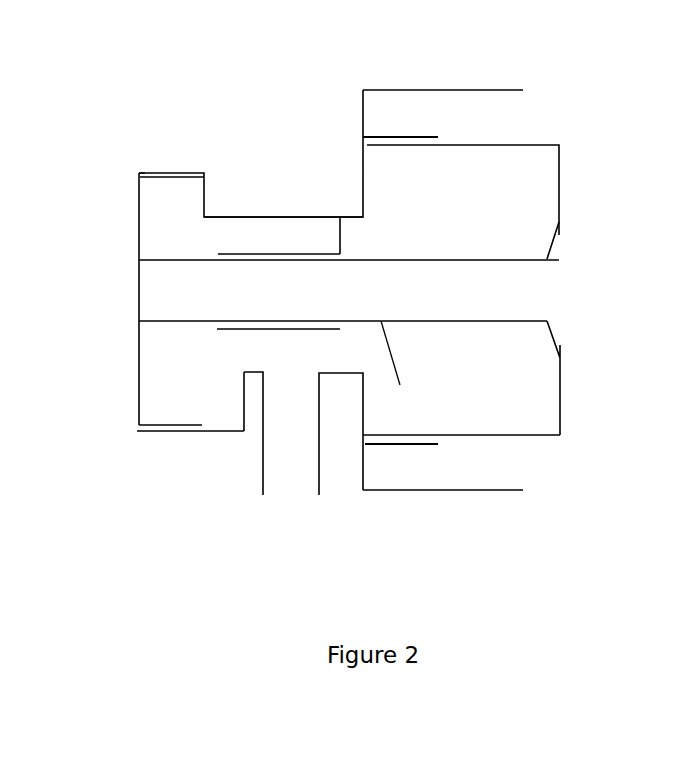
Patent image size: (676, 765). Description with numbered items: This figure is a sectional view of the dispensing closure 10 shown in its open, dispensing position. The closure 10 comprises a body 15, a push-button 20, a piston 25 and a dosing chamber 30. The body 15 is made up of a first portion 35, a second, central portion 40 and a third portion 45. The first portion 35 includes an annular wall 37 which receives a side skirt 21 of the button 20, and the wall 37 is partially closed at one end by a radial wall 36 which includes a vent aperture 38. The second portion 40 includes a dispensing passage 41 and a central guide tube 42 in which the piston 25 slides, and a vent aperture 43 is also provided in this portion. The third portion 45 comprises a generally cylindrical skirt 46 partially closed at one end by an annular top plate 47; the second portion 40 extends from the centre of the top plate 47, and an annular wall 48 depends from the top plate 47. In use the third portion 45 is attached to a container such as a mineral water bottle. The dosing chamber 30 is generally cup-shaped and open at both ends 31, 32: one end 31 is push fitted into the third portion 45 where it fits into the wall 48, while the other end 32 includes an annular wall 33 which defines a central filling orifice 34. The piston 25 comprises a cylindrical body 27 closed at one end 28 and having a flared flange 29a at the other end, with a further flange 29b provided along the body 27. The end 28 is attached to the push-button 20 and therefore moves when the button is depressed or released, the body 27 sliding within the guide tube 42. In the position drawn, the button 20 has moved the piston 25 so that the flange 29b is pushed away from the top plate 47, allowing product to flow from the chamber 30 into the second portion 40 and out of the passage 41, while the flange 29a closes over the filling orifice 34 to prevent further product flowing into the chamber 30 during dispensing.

The dispensing closure 10 is at (285, 520).
The body 15 is at (305, 215).
The push-button 20 is at (139, 214).
The side skirt 21 is at (140, 173).
The piston 25 is at (169, 321).
The cylindrical body 27 is at (188, 321).
The closed end 28 is at (140, 259).
The flared flange 29a is at (552, 242).
The further flange 29b is at (383, 258).
The dosing chamber 30 is at (545, 437).
The one end of the dosing chamber 31 is at (367, 150).
The other end of the dosing chamber 32 is at (560, 412).
The annular wall 33 is at (560, 372).
The central filling orifice 34 is at (549, 292).
The first portion 35 is at (185, 173).
The radial wall 36 is at (244, 413).
The annular wall 37 is at (155, 431).
The vent aperture 38 is at (244, 388).
The second, central portion 40 is at (278, 217).
The dispensing passage 41 is at (319, 483).
The central guide tube 42 is at (234, 254).
The vent aperture 43 is at (340, 238).
The third portion 45 is at (437, 90).
The cylindrical skirt 46 is at (410, 490).
The annular top plate 47 is at (363, 437).
The annular wall 48 is at (408, 137).